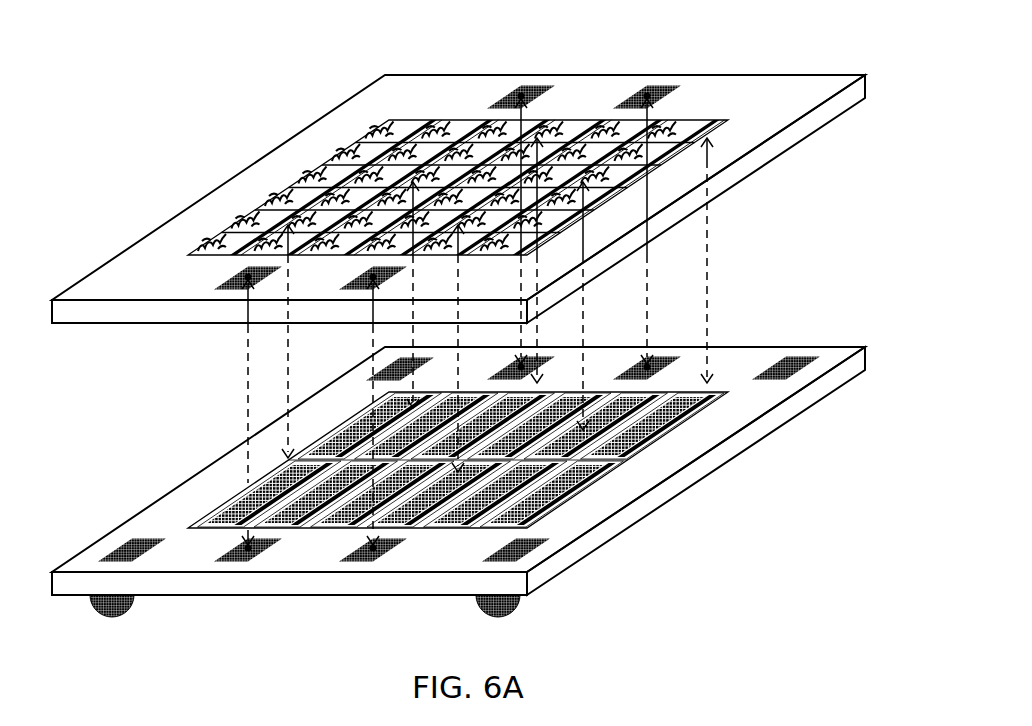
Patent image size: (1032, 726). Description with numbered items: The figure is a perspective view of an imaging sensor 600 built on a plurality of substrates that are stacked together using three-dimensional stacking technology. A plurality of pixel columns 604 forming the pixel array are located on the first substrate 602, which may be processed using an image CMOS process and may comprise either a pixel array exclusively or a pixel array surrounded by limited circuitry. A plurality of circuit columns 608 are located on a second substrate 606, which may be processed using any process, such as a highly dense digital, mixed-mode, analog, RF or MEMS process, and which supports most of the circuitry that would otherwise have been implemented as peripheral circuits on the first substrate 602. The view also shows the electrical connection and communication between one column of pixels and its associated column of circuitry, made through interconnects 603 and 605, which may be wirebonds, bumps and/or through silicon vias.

The imaging sensor 600 is at (153, 125).
The first substrate 602 is at (763, 152).
The interconnects 603 is at (527, 85).
The pixel columns 604 is at (713, 120).
The interconnects 605 is at (232, 565).
The second substrate 606 is at (720, 453).
The circuit columns 608 is at (587, 487).